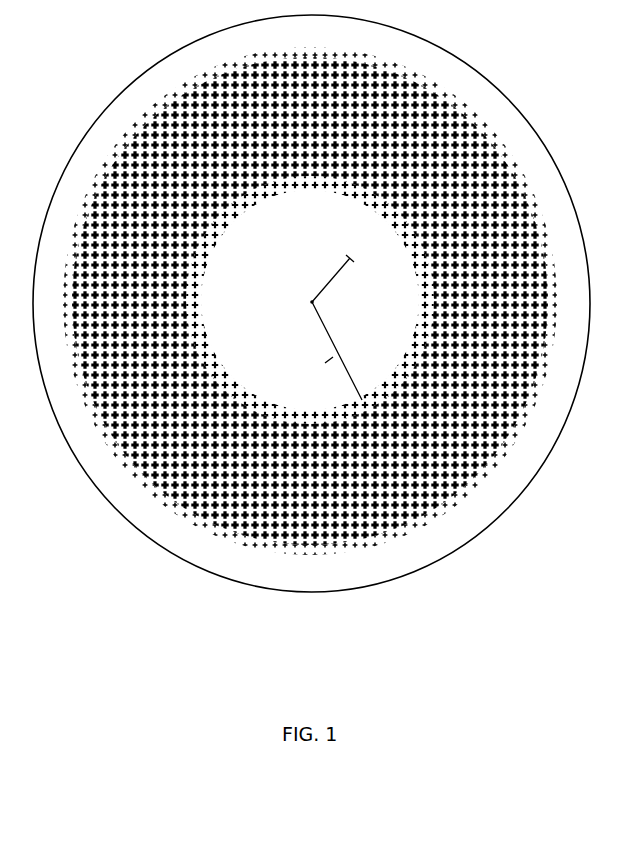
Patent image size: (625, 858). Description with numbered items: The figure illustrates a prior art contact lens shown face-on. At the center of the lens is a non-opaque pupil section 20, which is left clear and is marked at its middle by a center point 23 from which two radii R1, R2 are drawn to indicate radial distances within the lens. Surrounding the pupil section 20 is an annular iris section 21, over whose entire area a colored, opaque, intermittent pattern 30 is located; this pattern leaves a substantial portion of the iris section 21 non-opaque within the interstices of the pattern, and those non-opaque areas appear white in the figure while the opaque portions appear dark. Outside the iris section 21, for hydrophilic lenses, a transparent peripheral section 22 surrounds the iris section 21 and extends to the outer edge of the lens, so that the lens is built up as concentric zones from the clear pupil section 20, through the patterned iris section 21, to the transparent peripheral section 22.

The pupil section 20 is at (308, 312).
The iris section 21 is at (202, 523).
The peripheral section 22 is at (95, 445).
The lens center 23 is at (312, 302).
The pattern dots 30 is at (138, 480).
The inner radius of iris pattern R1 is at (343, 278).
The outer radius of iris pattern R2 is at (328, 351).